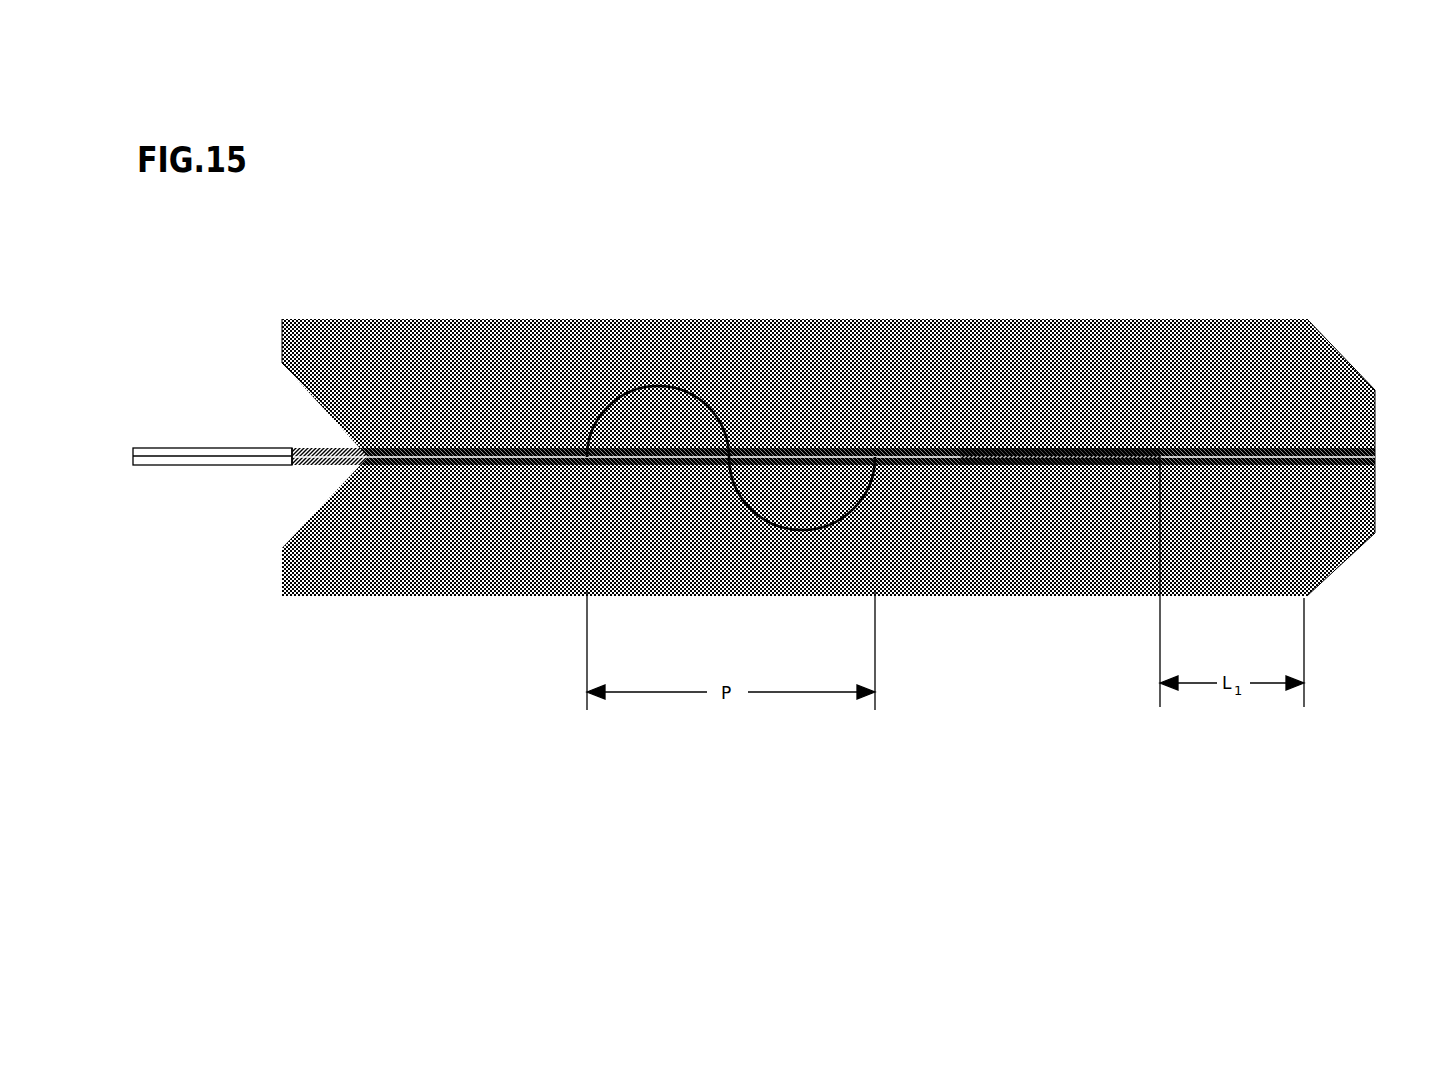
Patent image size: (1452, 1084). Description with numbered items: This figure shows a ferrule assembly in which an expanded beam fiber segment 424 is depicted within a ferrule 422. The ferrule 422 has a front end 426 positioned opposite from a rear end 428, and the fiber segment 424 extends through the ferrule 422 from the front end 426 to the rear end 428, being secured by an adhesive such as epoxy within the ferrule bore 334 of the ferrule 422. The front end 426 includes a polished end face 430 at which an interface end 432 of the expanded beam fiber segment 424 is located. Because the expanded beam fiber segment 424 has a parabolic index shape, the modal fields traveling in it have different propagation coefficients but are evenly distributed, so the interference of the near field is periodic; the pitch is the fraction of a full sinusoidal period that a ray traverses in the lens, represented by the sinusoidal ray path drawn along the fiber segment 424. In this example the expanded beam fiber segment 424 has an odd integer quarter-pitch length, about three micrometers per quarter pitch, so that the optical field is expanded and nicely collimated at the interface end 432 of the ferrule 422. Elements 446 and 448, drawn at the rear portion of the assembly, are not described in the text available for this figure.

The ferrule 422 is at (1005, 307).
The expanded beam fiber segment 424 is at (326, 433).
The front end 426 is at (1353, 574).
The rear end 428 is at (271, 318).
The end face 430 is at (1342, 355).
The interface end 432 is at (1372, 497).
The tube 446 is at (185, 481).
The tube end 448 is at (292, 449).
The ferrule bore 334 is at (1015, 458).